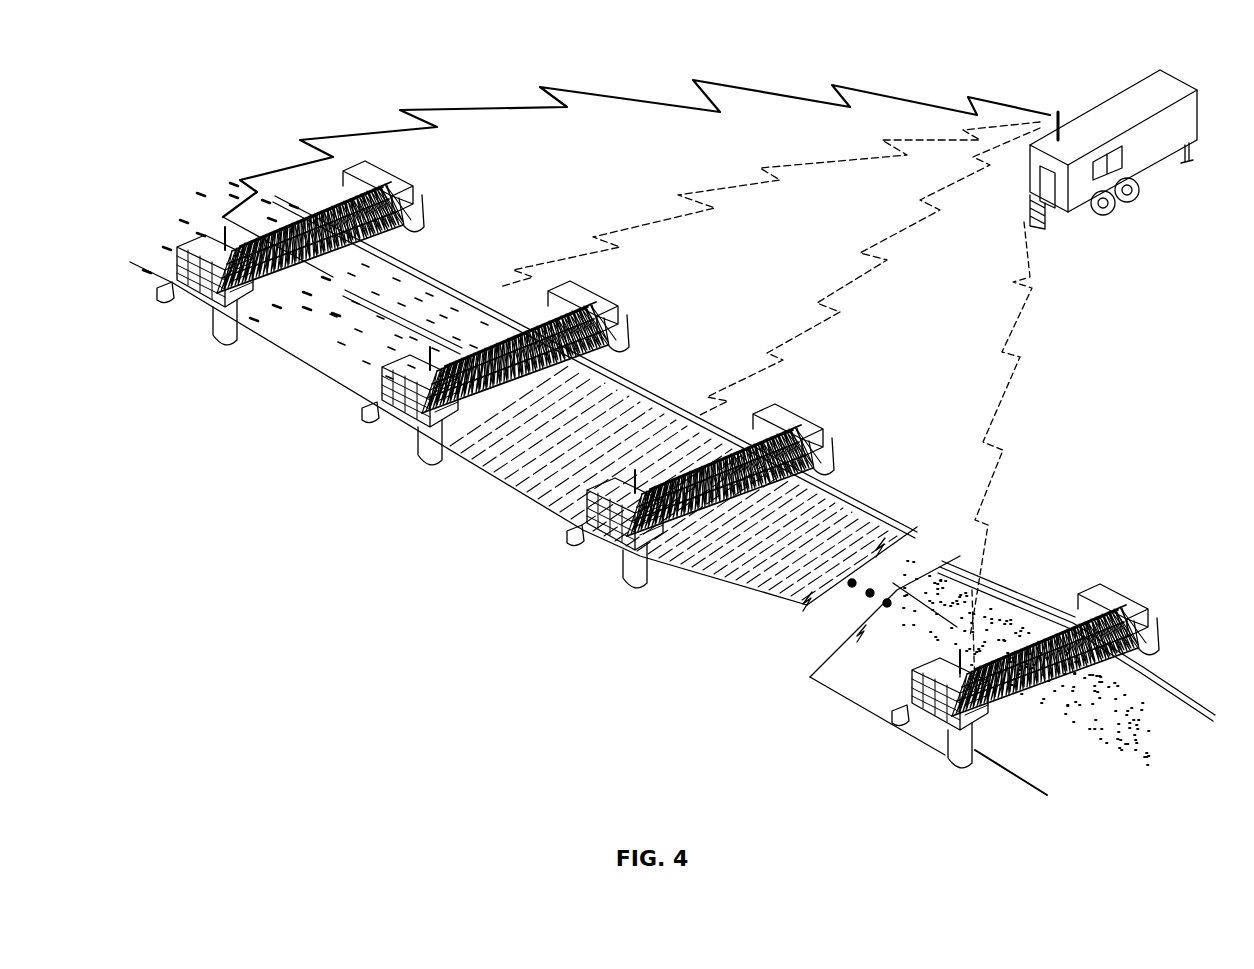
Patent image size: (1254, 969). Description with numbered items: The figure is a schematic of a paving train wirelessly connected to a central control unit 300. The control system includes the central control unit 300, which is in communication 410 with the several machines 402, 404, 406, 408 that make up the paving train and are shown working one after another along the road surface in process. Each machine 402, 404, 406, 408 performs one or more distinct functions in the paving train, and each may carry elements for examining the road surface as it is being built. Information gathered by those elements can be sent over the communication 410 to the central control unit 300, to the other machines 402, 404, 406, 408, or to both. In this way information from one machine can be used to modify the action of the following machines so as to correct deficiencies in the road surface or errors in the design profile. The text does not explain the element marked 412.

The central control unit 300 is at (1110, 108).
The machine 402 is at (190, 301).
The machine 404 is at (393, 428).
The machine 406 is at (620, 556).
The machine 408 is at (928, 732).
The communication 410 is at (547, 90).
The paving path 412 is at (383, 300).